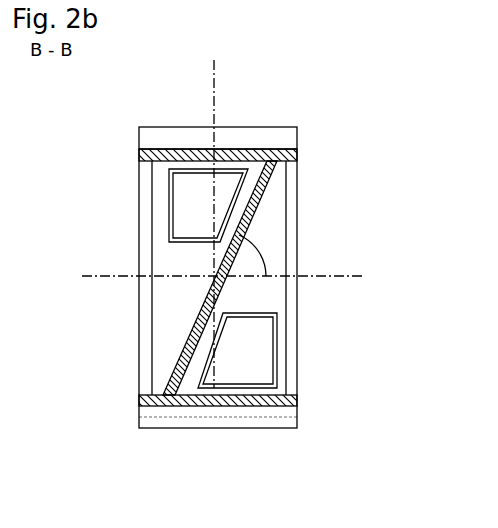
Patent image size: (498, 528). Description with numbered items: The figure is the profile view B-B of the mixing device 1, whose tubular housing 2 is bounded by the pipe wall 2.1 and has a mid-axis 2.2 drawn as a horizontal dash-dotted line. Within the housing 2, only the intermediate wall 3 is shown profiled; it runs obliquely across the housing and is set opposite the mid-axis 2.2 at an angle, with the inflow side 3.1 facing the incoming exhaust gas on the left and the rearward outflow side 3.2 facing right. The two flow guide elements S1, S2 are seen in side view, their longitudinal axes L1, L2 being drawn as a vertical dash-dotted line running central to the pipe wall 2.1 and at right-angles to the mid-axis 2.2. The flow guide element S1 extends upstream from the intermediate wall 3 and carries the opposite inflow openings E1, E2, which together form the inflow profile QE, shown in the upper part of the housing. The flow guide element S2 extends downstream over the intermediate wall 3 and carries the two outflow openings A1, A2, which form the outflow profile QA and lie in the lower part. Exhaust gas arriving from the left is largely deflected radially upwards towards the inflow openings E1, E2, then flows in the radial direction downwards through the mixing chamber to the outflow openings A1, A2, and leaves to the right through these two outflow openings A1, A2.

The mixing device 1 is at (188, 118).
The housing 2 is at (260, 264).
The pipe wall 2.1 is at (298, 155).
The mid-axis 2.2 is at (340, 277).
The intermediate wall 3 is at (227, 278).
The inflow side 3.1 is at (189, 328).
The outflow side 3.2 is at (256, 216).
The longitudinal axis L1 is at (223, 211).
The longitudinal axis L2 is at (214, 76).
The inflow opening E1 is at (189, 225).
The inflow opening E2 is at (167, 216).
The inflow profile QE is at (145, 205).
The outflow opening A1 is at (280, 325).
The outflow opening A2 is at (259, 355).
The outflow profile QA is at (301, 351).
The flow guide element S1 is at (177, 263).
The flow guide element S2 is at (276, 258).